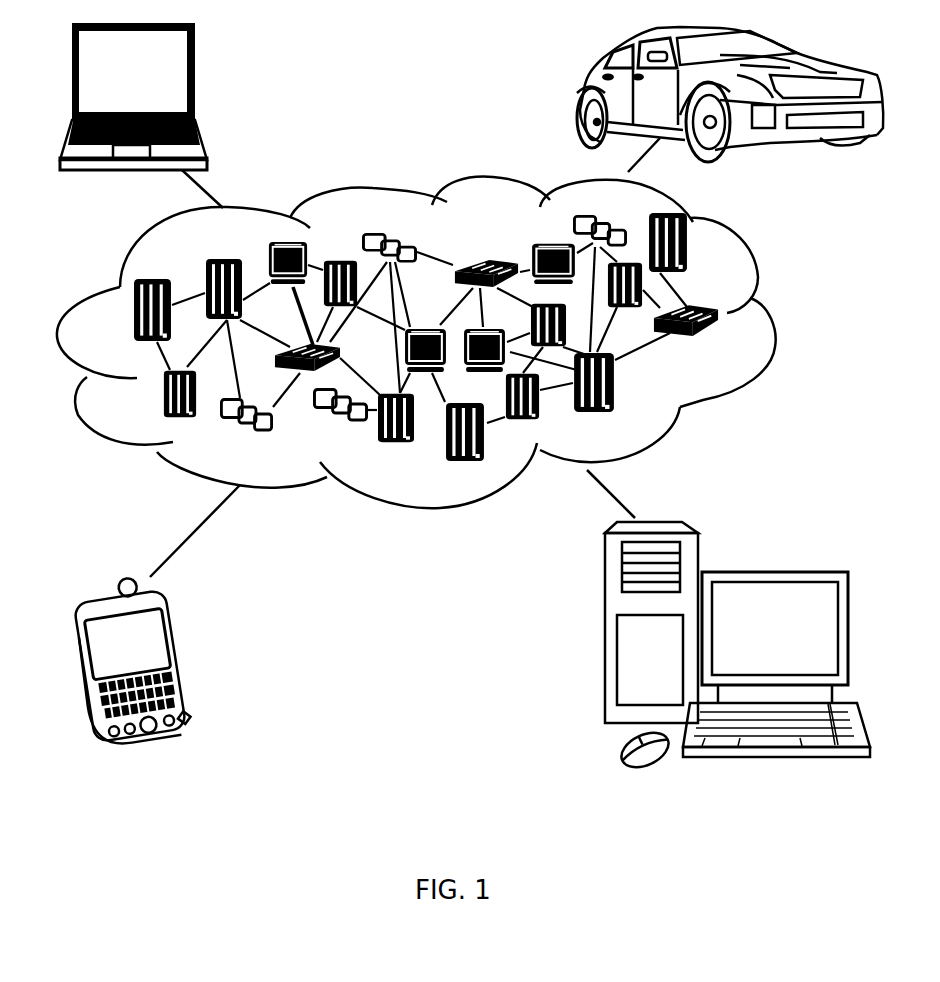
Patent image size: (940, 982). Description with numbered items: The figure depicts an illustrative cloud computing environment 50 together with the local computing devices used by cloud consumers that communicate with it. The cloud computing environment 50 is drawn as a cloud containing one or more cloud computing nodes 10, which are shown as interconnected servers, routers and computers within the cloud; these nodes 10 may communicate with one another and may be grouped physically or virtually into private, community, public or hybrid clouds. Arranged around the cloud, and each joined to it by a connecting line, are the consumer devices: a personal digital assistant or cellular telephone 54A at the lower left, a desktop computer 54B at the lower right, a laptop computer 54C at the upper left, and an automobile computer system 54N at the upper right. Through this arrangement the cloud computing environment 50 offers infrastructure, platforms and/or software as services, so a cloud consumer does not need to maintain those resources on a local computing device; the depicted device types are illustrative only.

The cloud computing nodes 10 is at (722, 346).
The cloud computing environment 50 is at (770, 317).
The personal digital assistant (PDA) or cellular telephone 54A is at (185, 657).
The desktop computer 54B is at (772, 571).
The laptop computer 54C is at (196, 78).
The automobile computer system 54N is at (580, 93).